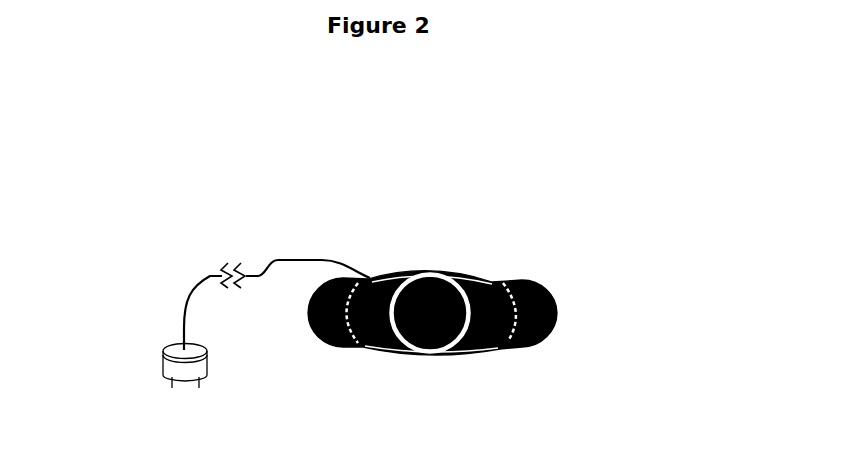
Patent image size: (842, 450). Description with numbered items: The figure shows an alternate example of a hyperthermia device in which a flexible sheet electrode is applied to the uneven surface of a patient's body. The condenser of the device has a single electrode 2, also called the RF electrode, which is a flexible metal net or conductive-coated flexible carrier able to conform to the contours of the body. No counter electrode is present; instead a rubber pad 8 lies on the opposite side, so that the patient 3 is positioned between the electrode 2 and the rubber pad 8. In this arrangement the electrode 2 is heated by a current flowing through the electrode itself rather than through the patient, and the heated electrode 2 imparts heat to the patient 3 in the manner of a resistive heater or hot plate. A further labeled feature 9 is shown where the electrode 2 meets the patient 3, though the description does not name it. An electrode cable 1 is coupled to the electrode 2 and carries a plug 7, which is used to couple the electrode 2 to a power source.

The electrode cable 1 is at (157, 293).
The electrode 2 is at (415, 262).
The patient 3 is at (561, 281).
The plug 7 is at (138, 367).
The rubber pad 8 is at (495, 355).
The ring / opening 9 is at (498, 270).